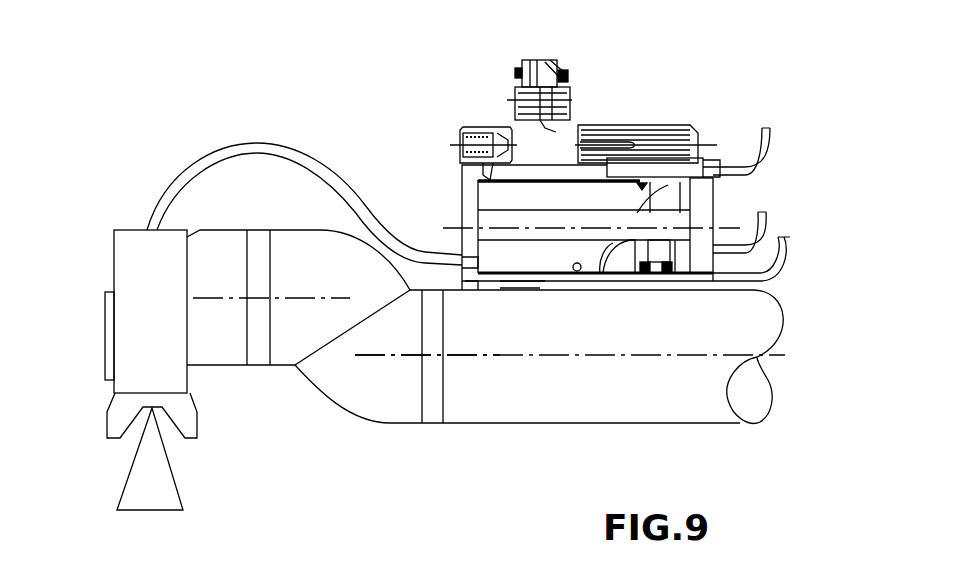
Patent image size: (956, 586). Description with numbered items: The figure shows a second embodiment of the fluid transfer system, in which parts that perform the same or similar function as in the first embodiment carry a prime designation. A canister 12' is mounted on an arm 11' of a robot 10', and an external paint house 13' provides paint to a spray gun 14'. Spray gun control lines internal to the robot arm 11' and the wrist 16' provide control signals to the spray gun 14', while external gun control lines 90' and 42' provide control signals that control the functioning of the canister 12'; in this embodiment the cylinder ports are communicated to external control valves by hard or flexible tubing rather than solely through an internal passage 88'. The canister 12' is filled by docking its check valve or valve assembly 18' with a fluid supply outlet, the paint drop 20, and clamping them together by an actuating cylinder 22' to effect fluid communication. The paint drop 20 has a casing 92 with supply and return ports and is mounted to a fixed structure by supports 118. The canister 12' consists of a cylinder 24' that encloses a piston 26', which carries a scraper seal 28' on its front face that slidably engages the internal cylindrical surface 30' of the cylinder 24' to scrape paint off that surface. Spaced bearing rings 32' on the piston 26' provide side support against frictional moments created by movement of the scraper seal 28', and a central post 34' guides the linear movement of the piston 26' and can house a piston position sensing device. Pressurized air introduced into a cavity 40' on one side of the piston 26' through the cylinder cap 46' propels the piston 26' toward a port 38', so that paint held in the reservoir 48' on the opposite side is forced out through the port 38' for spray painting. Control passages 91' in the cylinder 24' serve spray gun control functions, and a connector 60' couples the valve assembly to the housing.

The robot 10' is at (426, 430).
The arm 11' is at (570, 395).
The canister 12' is at (616, 185).
The external paint house 13' is at (304, 171).
The spray gun 14' is at (186, 372).
The wrist 16' is at (349, 335).
The valve assembly 18' is at (482, 111).
The paint drop 20 is at (511, 68).
The supports 118 is at (520, 66).
The casing 92 is at (556, 132).
The actuating cylinder 22' is at (646, 119).
The passage 88' is at (684, 126).
The external gun control line 90' is at (759, 151).
The external gun control line 42' is at (758, 215).
The reservoir 48' is at (449, 221).
The connector 60' is at (509, 186).
The bearing rings 32' is at (632, 197).
The port 38' is at (486, 300).
The cylinder 24' is at (507, 320).
The control passages 91' is at (525, 316).
The internal cylindrical surface 30' is at (565, 291).
The scraper seal 28' is at (619, 279).
The central post 34' is at (611, 297).
The piston 26' is at (660, 296).
The cavity 40' is at (683, 279).
The cylinder cap 46' is at (718, 309).